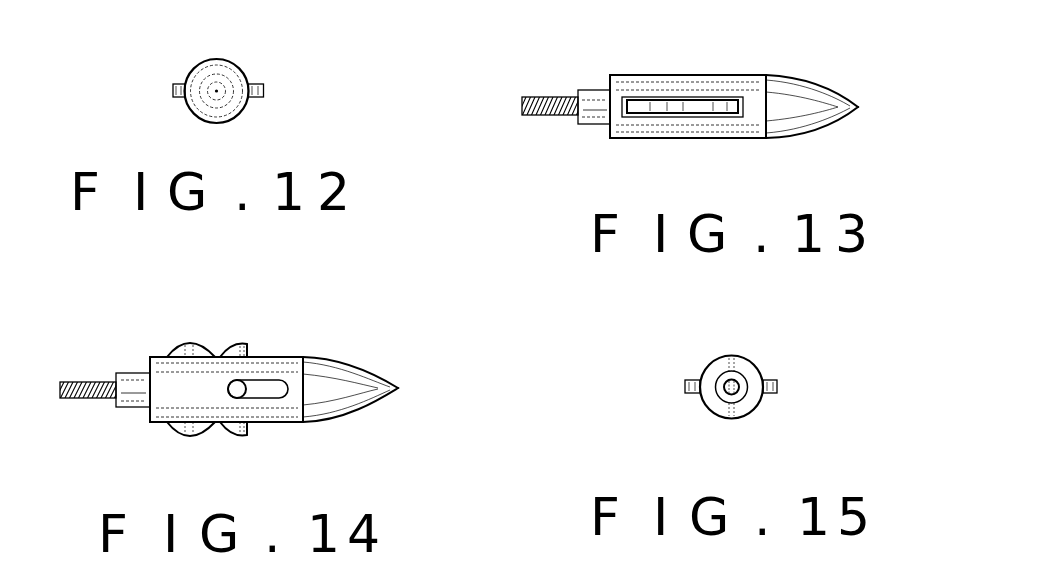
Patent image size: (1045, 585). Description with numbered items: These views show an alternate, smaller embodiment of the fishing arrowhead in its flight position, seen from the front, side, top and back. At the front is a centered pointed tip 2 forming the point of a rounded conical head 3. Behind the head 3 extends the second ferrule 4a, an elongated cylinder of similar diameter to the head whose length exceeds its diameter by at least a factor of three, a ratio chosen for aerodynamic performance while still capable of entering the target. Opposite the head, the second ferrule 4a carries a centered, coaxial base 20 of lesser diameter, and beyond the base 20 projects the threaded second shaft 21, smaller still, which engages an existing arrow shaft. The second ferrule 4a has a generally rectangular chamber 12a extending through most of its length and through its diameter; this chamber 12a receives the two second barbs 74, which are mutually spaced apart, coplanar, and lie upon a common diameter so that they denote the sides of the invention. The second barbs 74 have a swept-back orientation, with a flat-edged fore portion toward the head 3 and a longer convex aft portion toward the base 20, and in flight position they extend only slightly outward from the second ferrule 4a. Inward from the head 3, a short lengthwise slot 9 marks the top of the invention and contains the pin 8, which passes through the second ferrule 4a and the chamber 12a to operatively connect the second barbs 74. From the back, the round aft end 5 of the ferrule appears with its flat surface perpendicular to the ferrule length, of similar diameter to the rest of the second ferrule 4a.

In FIG. 12, the tip 2 is at (217, 90).
In FIG. 13, the tip 2 is at (860, 107).
In FIG. 14, the tip 2 is at (398, 388).
In FIG. 12, the head 3 is at (215, 59).
In FIG. 13, the head 3 is at (817, 97).
In FIG. 14, the head 3 is at (337, 367).
In FIG. 13, the second ferrule 4a is at (672, 75).
In FIG. 14, the second ferrule 4a is at (226, 389).
In FIG. 15, the second ferrule 4a is at (717, 358).
In FIG. 15, the aft end 5 is at (737, 365).
In FIG. 14, the pin 8 is at (238, 382).
In FIG. 14, the slot 9 is at (263, 387).
In FIG. 13, the chamber 12a is at (697, 98).
In FIG. 13, the base 20 is at (598, 90).
In FIG. 14, the base 20 is at (140, 373).
In FIG. 13, the second shaft 21 is at (547, 97).
In FIG. 14, the second shaft 21 is at (83, 382).
In FIG. 15, the second shaft 21 is at (730, 395).
In FIG. 12, the second barbs 74 is at (172, 92).
In FIG. 13, the second barbs 74 is at (677, 113).
In FIG. 14, the second barbs 74 is at (193, 342).
In FIG. 15, the second barbs 74 is at (778, 386).